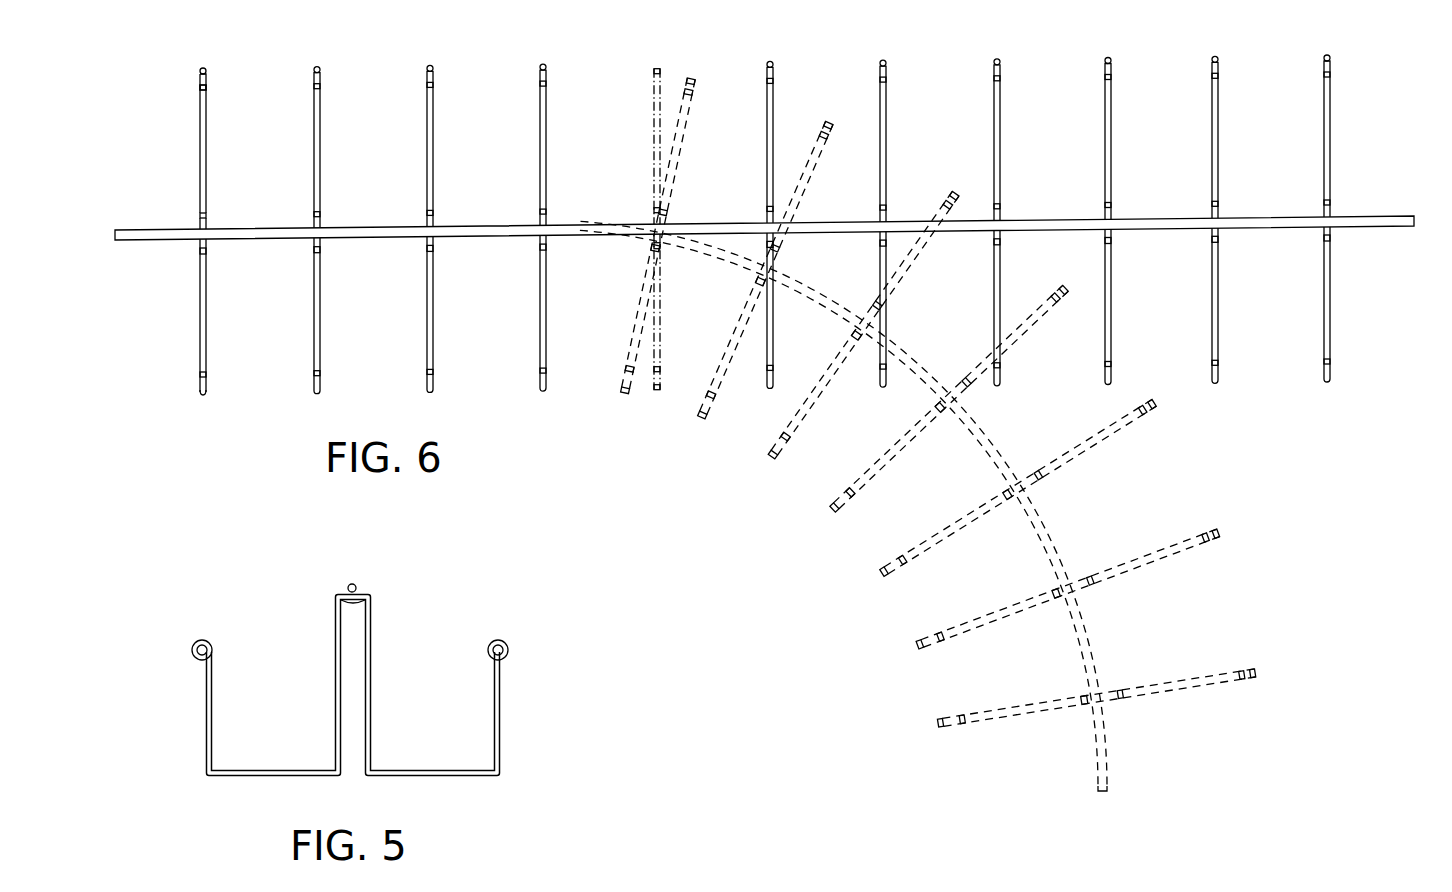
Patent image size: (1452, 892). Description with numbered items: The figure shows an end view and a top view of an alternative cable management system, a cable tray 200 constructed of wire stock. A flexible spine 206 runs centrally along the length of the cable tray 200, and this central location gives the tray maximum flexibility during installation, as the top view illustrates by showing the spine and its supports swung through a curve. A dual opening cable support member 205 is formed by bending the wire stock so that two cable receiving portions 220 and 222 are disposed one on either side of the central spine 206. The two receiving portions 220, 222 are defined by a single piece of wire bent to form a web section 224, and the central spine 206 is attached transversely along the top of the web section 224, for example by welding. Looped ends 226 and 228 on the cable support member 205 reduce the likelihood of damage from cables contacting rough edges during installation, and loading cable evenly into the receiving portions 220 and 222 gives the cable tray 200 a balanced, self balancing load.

In FIG. 6, the cable tray 200 is at (250, 420).
In FIG. 5, the cable tray 200 is at (440, 600).
In FIG. 6, the dual opening cable support member 205 is at (207, 70).
In FIG. 5, the dual opening cable support member 205 is at (332, 657).
In FIG. 6, the flexible spine 206 is at (262, 233).
In FIG. 5, the flexible spine 206 is at (350, 586).
In FIG. 6, the cable receiving portion 220 is at (200, 310).
In FIG. 5, the cable receiving portion 220 is at (250, 647).
In FIG. 6, the cable receiving portion 222 is at (186, 157).
In FIG. 5, the cable receiving portion 222 is at (440, 665).
In FIG. 5, the web section 224 is at (345, 605).
In FIG. 6, the looped end 226 is at (202, 382).
In FIG. 5, the looped end 226 is at (193, 651).
In FIG. 6, the looped end 228 is at (200, 80).
In FIG. 5, the looped end 228 is at (510, 642).